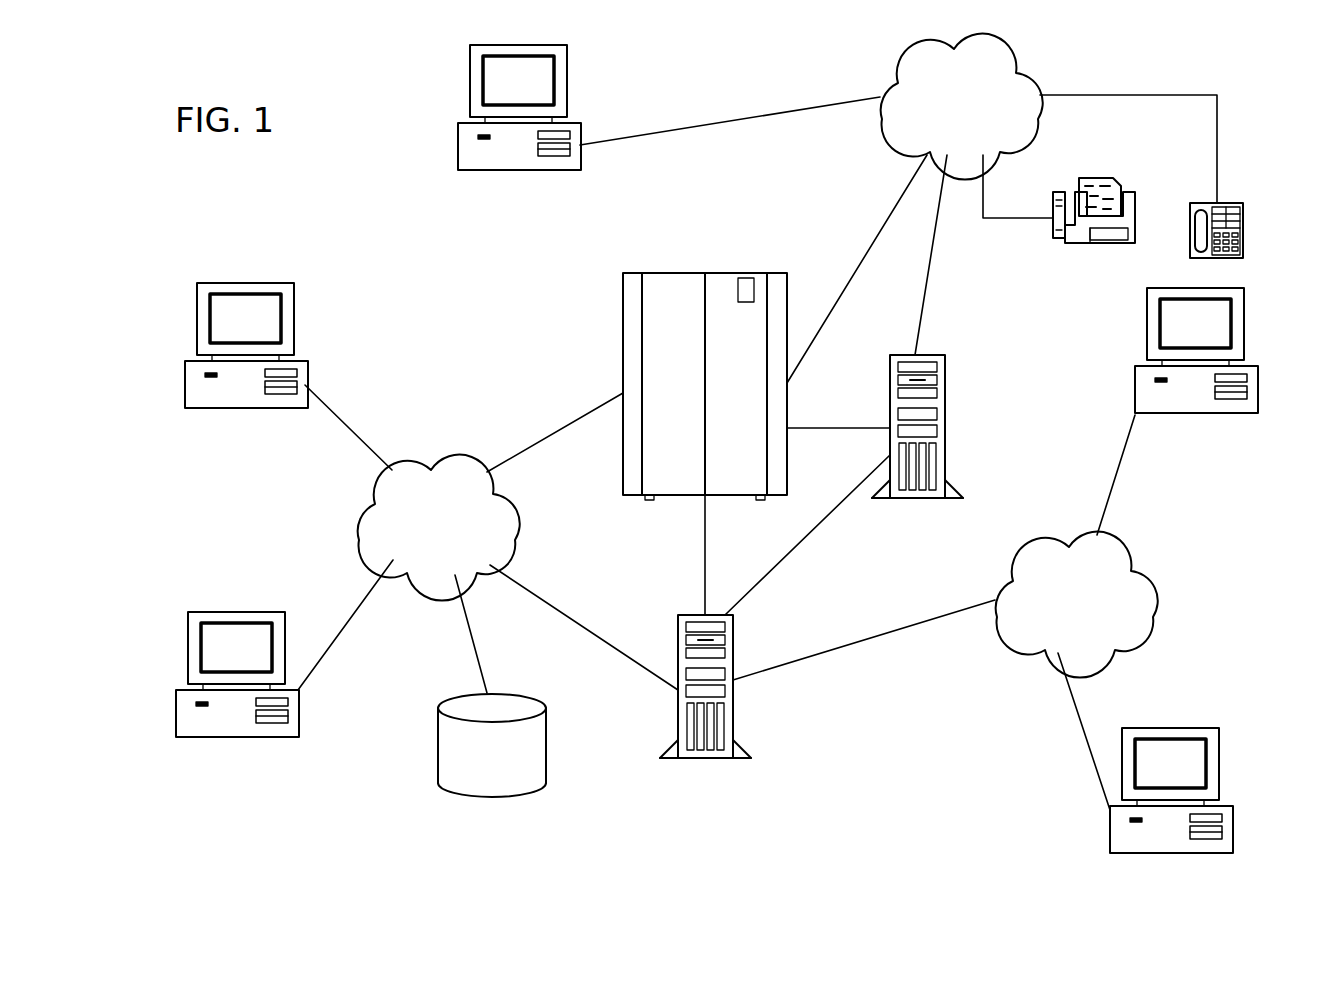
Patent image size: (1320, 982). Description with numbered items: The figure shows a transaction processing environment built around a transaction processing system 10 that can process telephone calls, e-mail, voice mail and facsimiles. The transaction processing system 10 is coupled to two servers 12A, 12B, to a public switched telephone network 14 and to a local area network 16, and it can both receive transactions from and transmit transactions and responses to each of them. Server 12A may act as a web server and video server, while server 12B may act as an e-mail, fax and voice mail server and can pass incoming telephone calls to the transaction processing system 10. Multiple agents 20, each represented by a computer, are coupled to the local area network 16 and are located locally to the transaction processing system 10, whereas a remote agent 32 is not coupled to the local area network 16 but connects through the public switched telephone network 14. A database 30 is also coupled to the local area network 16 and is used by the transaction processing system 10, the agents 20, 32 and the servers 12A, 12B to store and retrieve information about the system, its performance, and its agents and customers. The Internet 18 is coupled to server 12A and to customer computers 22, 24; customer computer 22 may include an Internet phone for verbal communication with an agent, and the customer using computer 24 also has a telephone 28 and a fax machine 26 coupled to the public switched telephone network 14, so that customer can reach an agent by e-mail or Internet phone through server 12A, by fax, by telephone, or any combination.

The transaction processing system 10 is at (623, 297).
The server 12A is at (745, 752).
The server 12B is at (960, 490).
The public switched telephone network 14 is at (912, 138).
The local area network 16 is at (357, 515).
The Internet 18 is at (1150, 572).
The agent 20 is at (305, 371).
The customer computer 22 is at (1110, 847).
The customer computer 24 is at (1135, 388).
The fax machine 26 is at (1093, 243).
The telephone 28 is at (1243, 222).
The database 30 is at (505, 790).
The agent 32 is at (460, 136).